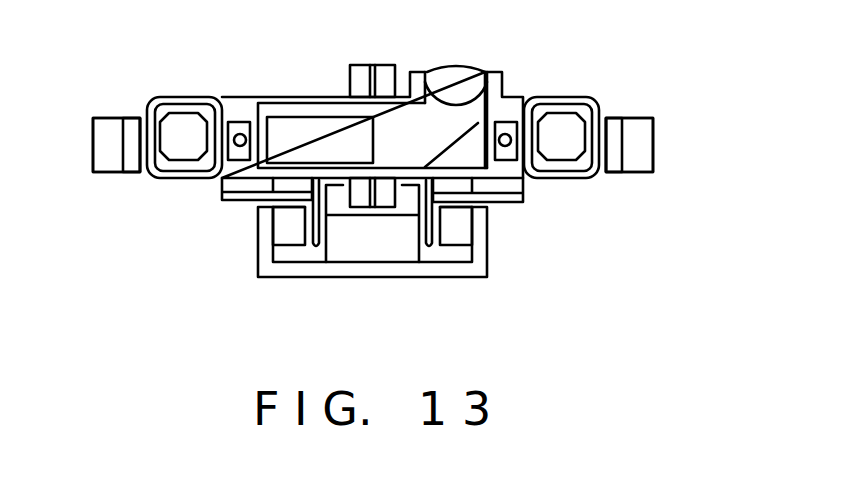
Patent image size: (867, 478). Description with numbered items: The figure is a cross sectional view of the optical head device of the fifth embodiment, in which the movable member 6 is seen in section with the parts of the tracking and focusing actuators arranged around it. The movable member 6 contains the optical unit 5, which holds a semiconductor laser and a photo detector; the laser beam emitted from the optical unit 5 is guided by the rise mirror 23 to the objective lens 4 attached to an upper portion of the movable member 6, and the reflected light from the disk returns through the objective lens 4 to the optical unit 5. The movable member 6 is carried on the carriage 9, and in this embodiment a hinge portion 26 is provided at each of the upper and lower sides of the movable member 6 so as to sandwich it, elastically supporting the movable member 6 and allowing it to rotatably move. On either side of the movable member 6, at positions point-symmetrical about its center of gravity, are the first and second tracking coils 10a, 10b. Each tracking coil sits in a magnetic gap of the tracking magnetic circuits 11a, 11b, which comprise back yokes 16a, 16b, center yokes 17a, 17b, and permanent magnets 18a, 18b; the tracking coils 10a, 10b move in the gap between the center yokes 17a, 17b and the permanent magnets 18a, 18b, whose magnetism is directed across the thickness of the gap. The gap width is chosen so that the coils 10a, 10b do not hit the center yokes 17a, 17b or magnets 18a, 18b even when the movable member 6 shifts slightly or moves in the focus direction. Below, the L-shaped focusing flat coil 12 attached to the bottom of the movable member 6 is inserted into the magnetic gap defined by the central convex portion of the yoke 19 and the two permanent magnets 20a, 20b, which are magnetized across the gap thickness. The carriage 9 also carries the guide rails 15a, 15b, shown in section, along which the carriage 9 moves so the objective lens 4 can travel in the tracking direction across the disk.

The objective lens 4 is at (445, 72).
The optical unit 5 is at (302, 126).
The movable member 6 is at (232, 176).
The carriage 9 is at (507, 202).
The first tracking coil 10a is at (580, 95).
The second tracking coil 10b is at (160, 100).
The tracking magnetic circuit 11a is at (657, 152).
The tracking magnetic circuit 11b is at (88, 149).
The focusing flat coil 12 is at (317, 262).
The guide rail 15a is at (508, 133).
The guide rail 15b is at (239, 136).
The back yoke 16a is at (640, 122).
The back yoke 16b is at (113, 165).
The center yoke 17a is at (563, 150).
The center yoke 17b is at (186, 130).
The permanent magnet 18a is at (615, 172).
The permanent magnet 18b is at (128, 122).
The yoke 19 is at (400, 260).
The permanent magnet 20a is at (462, 232).
The permanent magnet 20b is at (280, 228).
The rise mirror 23 is at (478, 132).
The hinge portion 26 is at (371, 80).